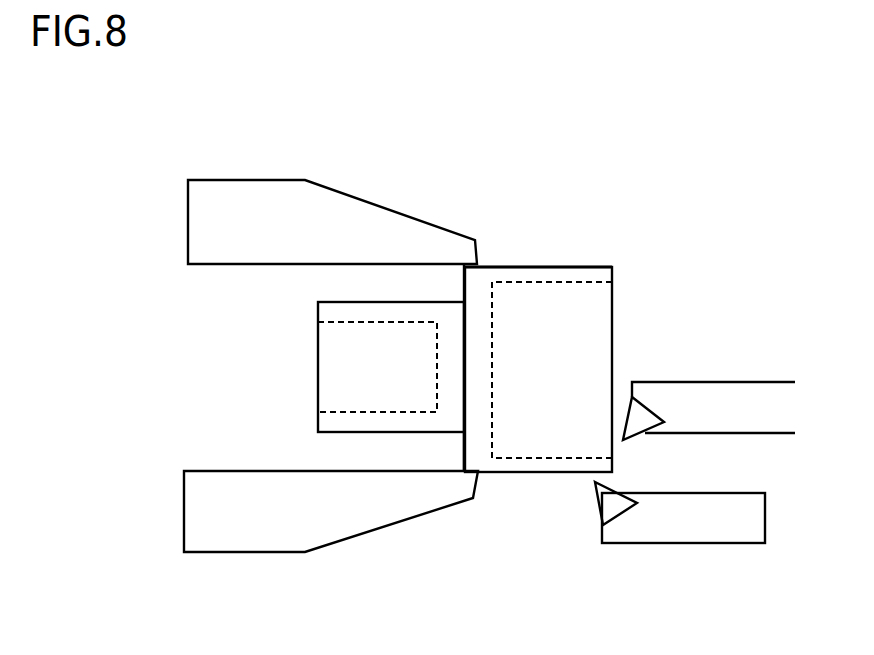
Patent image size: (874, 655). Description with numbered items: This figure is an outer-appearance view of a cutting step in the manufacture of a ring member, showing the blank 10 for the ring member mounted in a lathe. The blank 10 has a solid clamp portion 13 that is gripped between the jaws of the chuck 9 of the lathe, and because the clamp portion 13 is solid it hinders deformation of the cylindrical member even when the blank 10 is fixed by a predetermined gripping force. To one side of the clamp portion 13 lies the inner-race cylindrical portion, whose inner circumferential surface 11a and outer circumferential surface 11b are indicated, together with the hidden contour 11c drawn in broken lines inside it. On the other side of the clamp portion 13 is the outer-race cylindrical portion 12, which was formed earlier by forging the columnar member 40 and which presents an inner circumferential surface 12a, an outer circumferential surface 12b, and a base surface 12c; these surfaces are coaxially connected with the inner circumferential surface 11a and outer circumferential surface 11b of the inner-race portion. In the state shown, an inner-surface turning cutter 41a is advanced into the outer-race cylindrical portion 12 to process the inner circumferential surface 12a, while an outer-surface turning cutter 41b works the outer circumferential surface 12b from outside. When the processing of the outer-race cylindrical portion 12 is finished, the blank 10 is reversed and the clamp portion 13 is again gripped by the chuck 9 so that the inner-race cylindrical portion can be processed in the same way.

The chuck 9 is at (422, 240).
The blank 10 is at (425, 470).
The inner circumferential surface 11a is at (345, 321).
The outer circumferential surface 11b is at (372, 300).
The internal element of member 11 11c is at (437, 387).
The outer-race cylindrical portion 12 is at (610, 256).
The inner circumferential surface 12a is at (572, 283).
The outer circumferential surface 12b is at (550, 265).
The base surface 12c is at (492, 350).
The clamp portion 13 is at (482, 463).
The columnar member 40 is at (514, 242).
The inner-surface turning cutter 41a is at (752, 382).
The outer-surface turning cutter 41b is at (690, 543).